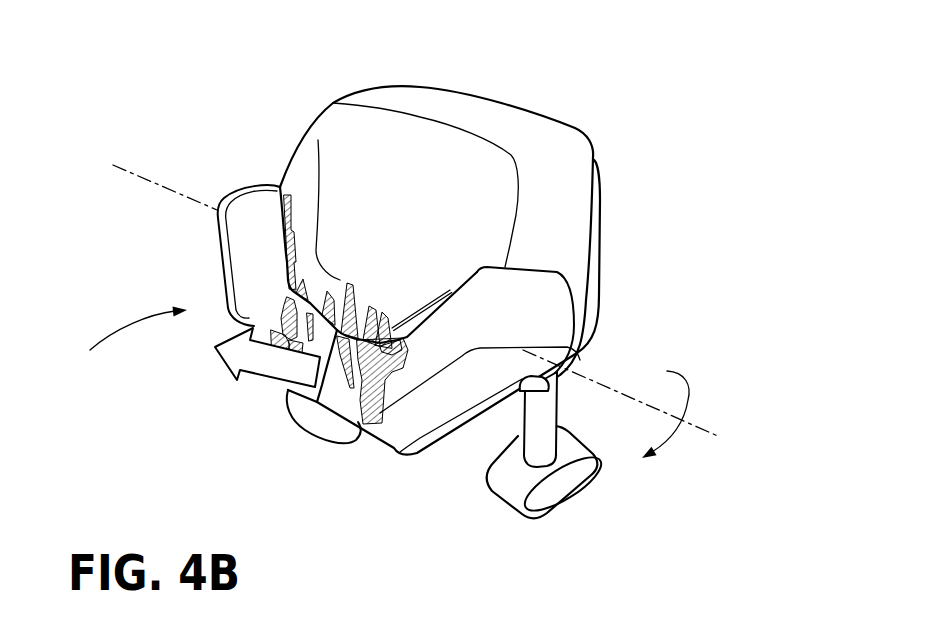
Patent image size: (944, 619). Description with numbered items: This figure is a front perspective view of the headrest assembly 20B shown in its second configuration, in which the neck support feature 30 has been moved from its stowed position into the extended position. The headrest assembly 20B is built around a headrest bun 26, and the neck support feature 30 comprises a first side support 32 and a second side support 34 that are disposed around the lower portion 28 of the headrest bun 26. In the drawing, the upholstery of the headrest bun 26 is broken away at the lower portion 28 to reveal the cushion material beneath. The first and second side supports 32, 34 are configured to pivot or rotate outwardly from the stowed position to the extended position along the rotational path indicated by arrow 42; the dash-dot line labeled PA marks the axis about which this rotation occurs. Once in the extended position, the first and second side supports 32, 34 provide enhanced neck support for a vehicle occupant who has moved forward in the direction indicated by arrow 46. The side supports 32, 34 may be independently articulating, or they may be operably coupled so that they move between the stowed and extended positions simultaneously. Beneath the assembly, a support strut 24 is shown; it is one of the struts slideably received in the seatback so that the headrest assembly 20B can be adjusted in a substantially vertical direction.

The headrest assembly 20B is at (705, 136).
The second support strut 24 is at (537, 447).
The headrest bun 26 is at (452, 152).
The lower portion 28 is at (318, 140).
The neck support feature 30 is at (120, 346).
The first side support 32 is at (245, 238).
The second side support 34 is at (536, 313).
The arrow 42 is at (688, 387).
The arrow 46 is at (253, 365).
The pivot axis PA is at (712, 432).